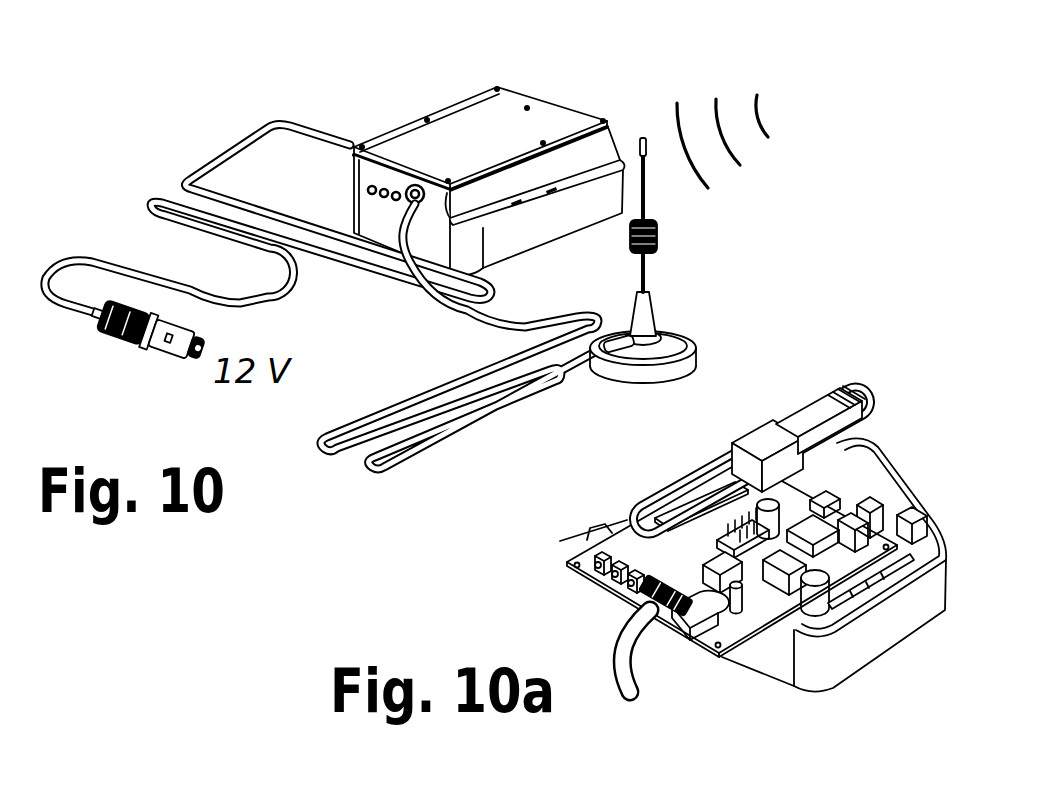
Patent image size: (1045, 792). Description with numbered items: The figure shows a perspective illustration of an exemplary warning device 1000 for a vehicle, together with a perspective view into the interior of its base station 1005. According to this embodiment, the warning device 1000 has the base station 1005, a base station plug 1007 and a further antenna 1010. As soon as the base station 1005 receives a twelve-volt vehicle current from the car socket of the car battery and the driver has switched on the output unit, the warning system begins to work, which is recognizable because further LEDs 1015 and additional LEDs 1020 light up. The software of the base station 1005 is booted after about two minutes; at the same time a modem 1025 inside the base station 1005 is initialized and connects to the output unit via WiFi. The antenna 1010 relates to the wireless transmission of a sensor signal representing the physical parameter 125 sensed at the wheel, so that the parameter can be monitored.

In FIG. 10, the warning device 1000 is at (354, 96).
In FIG. 10, the base station 1005 is at (490, 84).
In FIG. 10a, the base station 1005 is at (658, 476).
In FIG. 10, the base station plug 1007 is at (132, 352).
In FIG. 10, the further antenna 1010 is at (650, 188).
In FIG. 10, the further LEDs 1015 is at (535, 252).
In FIG. 10a, the further LEDs 1015 is at (882, 631).
In FIG. 10, the additional LEDs 1020 is at (396, 200).
In FIG. 10a, the additional LEDs 1020 is at (631, 591).
In FIG. 10, the modem 1025 is at (556, 149).
In FIG. 10a, the modem 1025 is at (772, 655).
In FIG. 10, the physical parameter 125 is at (778, 100).